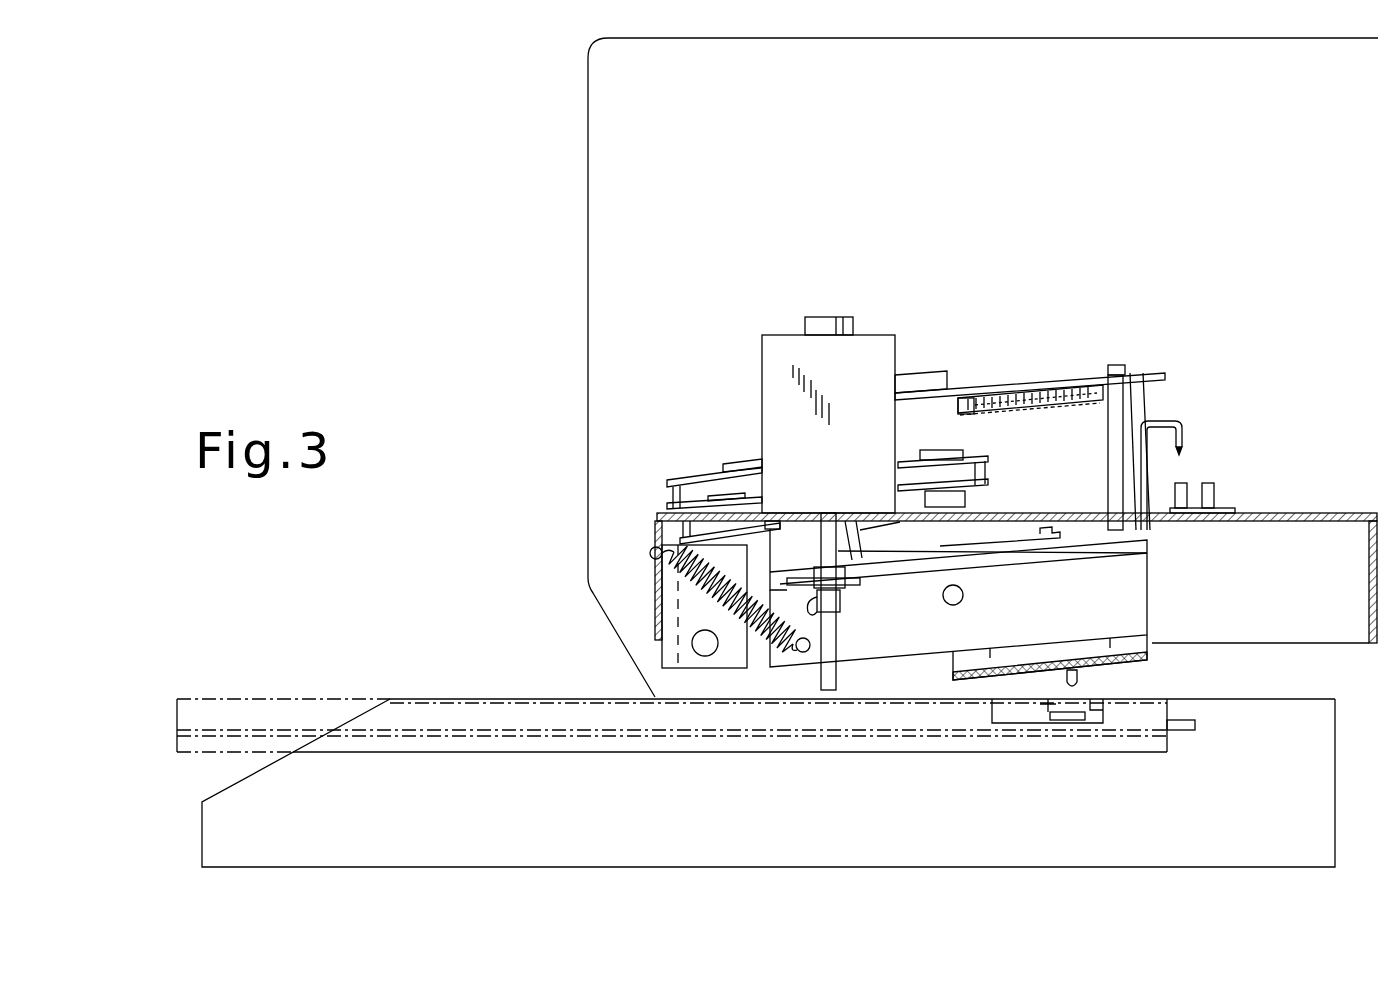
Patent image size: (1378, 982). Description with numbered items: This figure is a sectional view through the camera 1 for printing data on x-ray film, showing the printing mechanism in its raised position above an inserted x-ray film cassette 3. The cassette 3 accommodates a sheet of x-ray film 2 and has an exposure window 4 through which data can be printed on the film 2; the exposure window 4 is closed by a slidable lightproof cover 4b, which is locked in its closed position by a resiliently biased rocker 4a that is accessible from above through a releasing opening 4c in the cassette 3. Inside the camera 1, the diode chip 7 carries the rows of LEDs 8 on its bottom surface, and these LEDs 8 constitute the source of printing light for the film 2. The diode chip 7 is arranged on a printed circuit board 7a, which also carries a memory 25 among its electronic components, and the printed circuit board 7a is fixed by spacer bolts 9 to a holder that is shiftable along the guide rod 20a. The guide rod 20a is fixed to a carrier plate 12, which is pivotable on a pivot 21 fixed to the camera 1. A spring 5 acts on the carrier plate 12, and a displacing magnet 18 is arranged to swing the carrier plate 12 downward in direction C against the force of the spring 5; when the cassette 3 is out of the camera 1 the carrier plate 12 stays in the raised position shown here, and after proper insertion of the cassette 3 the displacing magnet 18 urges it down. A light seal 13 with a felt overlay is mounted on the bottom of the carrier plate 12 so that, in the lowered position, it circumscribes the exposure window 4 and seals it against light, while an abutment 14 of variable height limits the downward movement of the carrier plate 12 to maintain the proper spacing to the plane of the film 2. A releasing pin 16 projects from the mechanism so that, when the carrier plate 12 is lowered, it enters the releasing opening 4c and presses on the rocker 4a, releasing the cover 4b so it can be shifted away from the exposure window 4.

The camera 1 is at (570, 291).
The x-ray film 2 is at (540, 735).
The x-ray film cassette 3 is at (325, 698).
The exposure window 4 is at (992, 712).
The rocker 4a is at (1065, 720).
The lightproof cover 4b is at (1095, 705).
The releasing opening 4c is at (1048, 708).
The spring 5 is at (680, 598).
The diode chip 7 is at (963, 400).
The printed circuit board 7a is at (1052, 385).
The LEDs 8 is at (1045, 405).
The spacer bolts 9 is at (1135, 405).
The carrier plate 12 is at (1130, 590).
The light seal 13 is at (1150, 660).
The abutment 14 is at (828, 652).
The releasing pin 16 is at (1080, 684).
The displacing magnet 18 is at (775, 410).
The guide rod 20a is at (963, 598).
The pivot 21 is at (702, 643).
The memory 25 is at (922, 380).
The direction C is at (1062, 630).